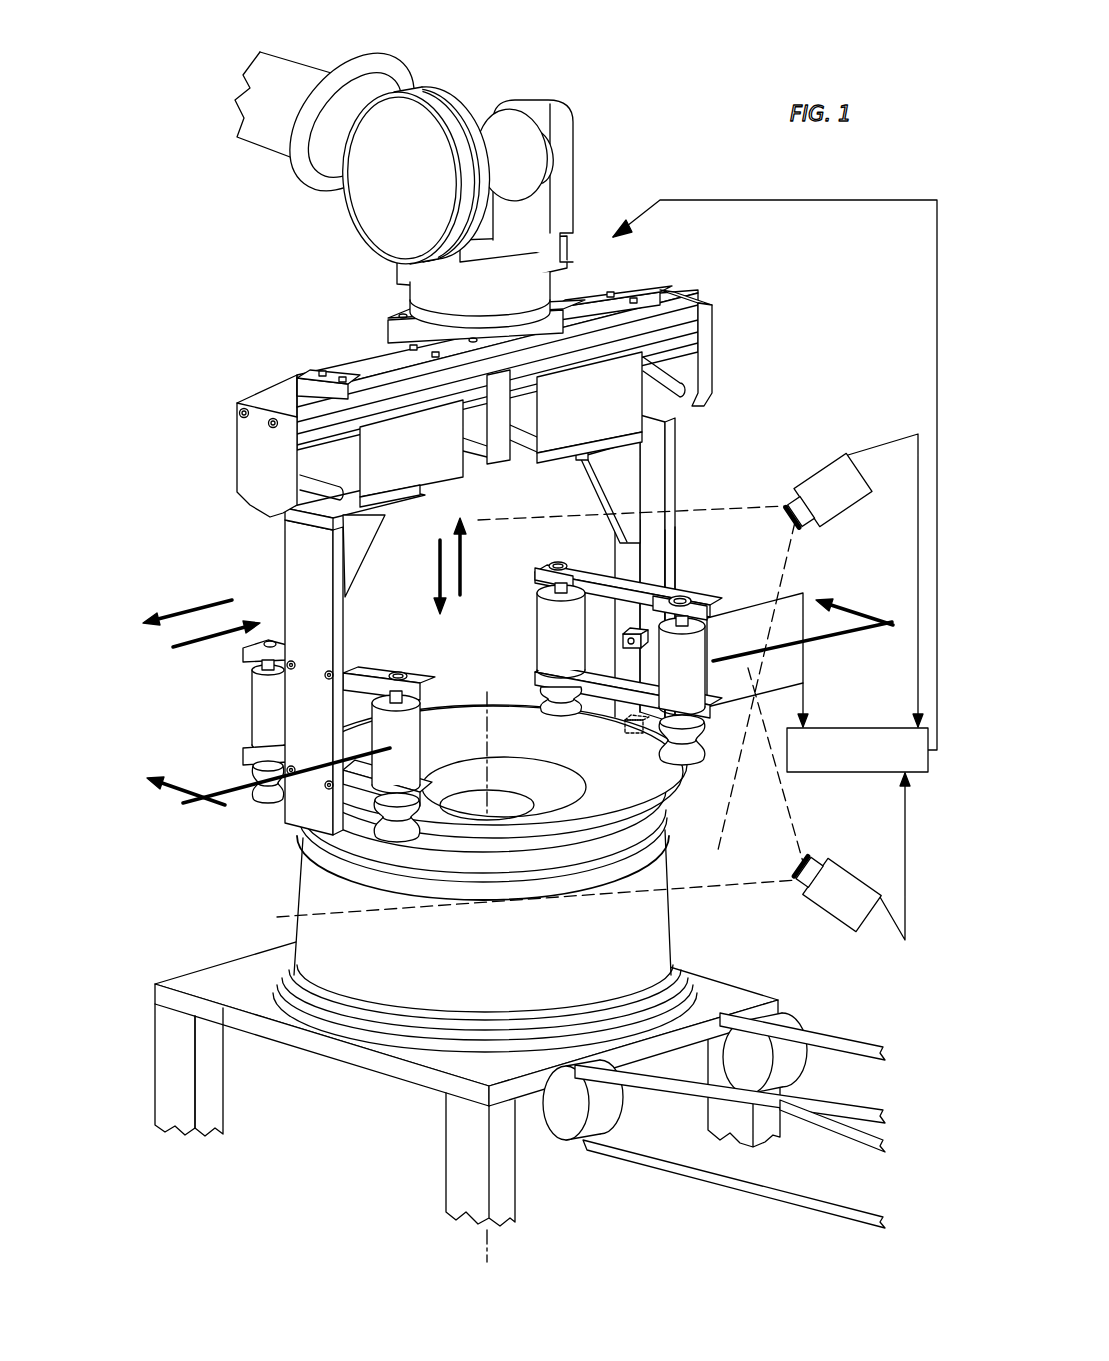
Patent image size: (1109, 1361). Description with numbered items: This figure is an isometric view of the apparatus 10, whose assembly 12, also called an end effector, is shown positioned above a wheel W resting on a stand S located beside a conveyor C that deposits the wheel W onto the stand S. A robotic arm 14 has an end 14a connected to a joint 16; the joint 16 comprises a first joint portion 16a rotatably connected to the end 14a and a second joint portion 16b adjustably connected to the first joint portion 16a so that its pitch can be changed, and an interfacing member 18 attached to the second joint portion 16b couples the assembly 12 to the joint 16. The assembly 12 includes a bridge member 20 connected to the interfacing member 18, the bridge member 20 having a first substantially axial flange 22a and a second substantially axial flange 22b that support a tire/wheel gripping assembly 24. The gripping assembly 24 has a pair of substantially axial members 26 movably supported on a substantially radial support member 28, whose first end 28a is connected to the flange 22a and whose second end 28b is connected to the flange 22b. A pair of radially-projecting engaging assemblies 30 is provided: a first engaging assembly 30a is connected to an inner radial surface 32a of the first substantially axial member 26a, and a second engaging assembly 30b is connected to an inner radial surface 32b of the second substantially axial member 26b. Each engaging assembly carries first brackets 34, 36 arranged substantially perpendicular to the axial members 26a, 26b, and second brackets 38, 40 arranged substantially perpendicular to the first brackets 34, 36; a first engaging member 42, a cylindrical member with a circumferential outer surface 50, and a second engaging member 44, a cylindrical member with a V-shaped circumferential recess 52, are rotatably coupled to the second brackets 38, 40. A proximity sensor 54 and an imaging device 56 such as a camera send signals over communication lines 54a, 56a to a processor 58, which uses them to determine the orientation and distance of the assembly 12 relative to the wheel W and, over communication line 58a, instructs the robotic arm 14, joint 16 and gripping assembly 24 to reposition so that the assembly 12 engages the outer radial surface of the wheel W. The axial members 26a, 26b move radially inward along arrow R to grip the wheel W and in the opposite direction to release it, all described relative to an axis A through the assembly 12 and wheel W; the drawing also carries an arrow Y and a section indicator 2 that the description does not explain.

The apparatus 10 is at (706, 95).
The assembly 12 is at (286, 330).
The robotic arm 14 is at (262, 165).
The end of robotic arm 14a is at (315, 60).
The joint 16 is at (352, 232).
The first joint portion 16a is at (402, 62).
The second joint portion 16b is at (586, 142).
The interfacing member 18 is at (388, 308).
The bridge member 20 is at (598, 290).
The first substantially axial flange 22a is at (236, 452).
The second substantially axial flange 22b is at (720, 338).
The tire/wheel gripping assembly 24 is at (240, 553).
The pair of substantially axial members 26 is at (680, 470).
The first substantially axial member 26a is at (283, 578).
The second substantially axial member 26b is at (681, 533).
The substantially radial support member 28 is at (470, 465).
The first end of radial support member 28a is at (292, 508).
The second end of radial support member 28b is at (683, 402).
The pair of radially-projecting engaging assemblies 30 is at (693, 586).
The first radially-projecting engaging assembly 30a is at (360, 650).
The second radially-projecting engaging assembly 30b is at (576, 552).
The inner radial surface of first axial member 32a is at (342, 607).
The inner radial surface of second axial member 32b is at (615, 556).
The first bracket 34 is at (368, 673).
The first bracket 36 is at (373, 797).
The second bracket 38 is at (268, 668).
The second bracket 40 is at (416, 702).
The first engaging member 42 is at (243, 680).
The second engaging member 44 is at (243, 774).
The circumferential outer surface 50 is at (257, 727).
The V-shaped circumferential recess 52 is at (272, 788).
The proximity sensor 54 is at (622, 638).
The communication line 54a is at (803, 663).
The imaging device 56 is at (816, 470).
The communication line 56a is at (918, 558).
The processor 58 is at (830, 773).
The communication line 58a is at (827, 200).
The wheel W is at (283, 902).
The stand S is at (322, 1086).
The conveyor C is at (633, 1172).
The axis A is at (485, 977).
The arrow R is at (201, 617).
The vertical direction Y is at (452, 566).
The section line 2 is at (526, 712).